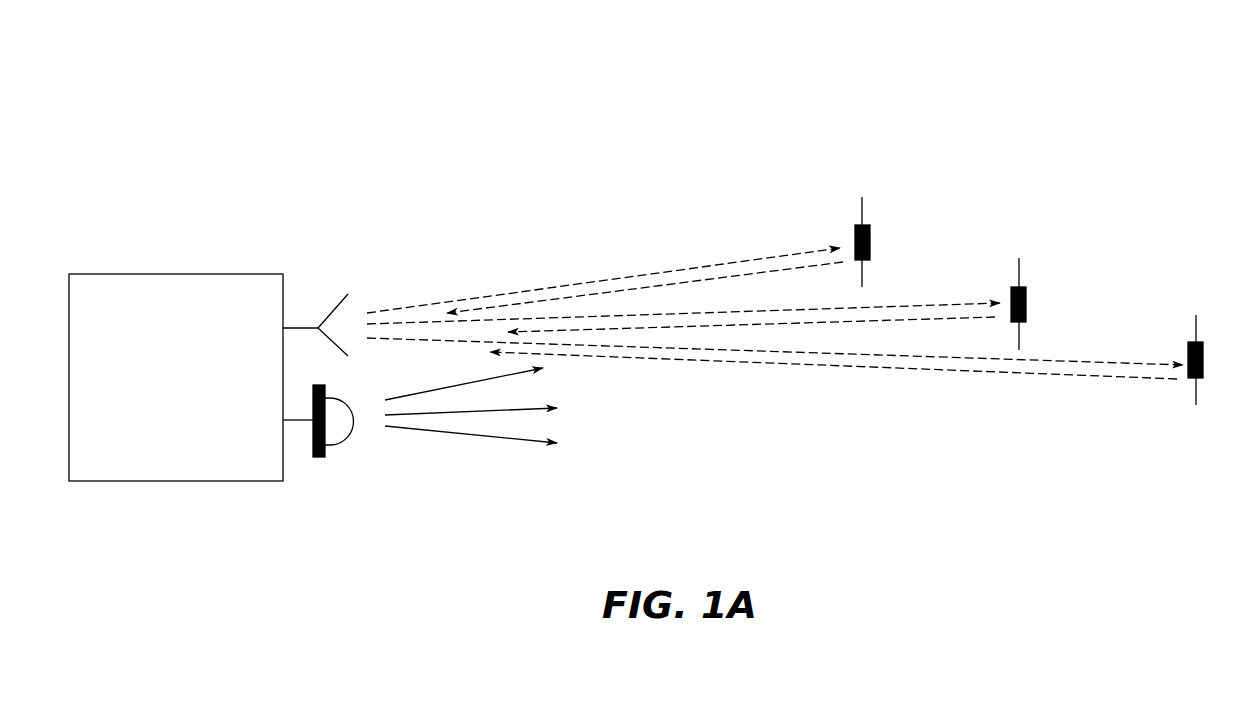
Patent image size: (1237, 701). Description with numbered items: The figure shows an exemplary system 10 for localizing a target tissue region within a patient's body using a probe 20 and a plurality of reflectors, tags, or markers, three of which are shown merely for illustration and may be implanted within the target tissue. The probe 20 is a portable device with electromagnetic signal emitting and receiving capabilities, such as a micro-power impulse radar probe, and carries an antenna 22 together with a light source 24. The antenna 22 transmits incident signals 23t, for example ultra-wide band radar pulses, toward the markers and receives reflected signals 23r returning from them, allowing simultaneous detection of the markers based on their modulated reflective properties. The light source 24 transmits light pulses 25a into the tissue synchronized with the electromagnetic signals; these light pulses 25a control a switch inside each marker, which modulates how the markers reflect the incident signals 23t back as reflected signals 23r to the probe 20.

The system 10 is at (511, 125).
The probe 20 is at (168, 265).
The antenna 22 is at (337, 308).
The light source 24 is at (319, 458).
The light pulses 25a is at (492, 438).
The incident signals 23t is at (683, 268).
The reflected signals 23r is at (728, 362).